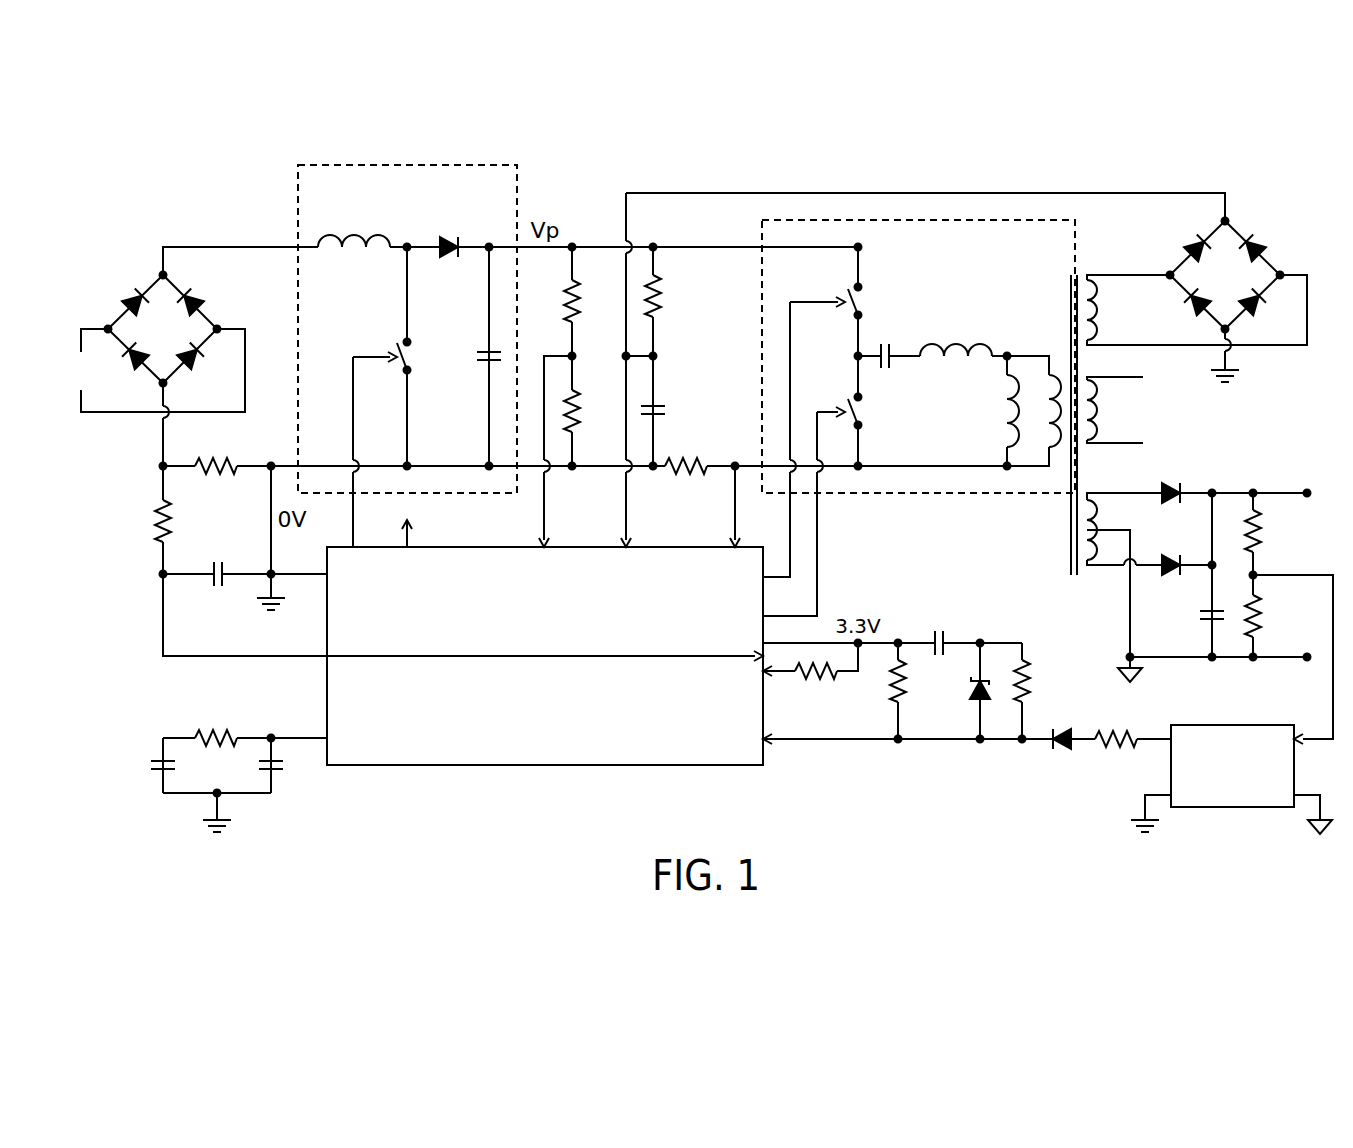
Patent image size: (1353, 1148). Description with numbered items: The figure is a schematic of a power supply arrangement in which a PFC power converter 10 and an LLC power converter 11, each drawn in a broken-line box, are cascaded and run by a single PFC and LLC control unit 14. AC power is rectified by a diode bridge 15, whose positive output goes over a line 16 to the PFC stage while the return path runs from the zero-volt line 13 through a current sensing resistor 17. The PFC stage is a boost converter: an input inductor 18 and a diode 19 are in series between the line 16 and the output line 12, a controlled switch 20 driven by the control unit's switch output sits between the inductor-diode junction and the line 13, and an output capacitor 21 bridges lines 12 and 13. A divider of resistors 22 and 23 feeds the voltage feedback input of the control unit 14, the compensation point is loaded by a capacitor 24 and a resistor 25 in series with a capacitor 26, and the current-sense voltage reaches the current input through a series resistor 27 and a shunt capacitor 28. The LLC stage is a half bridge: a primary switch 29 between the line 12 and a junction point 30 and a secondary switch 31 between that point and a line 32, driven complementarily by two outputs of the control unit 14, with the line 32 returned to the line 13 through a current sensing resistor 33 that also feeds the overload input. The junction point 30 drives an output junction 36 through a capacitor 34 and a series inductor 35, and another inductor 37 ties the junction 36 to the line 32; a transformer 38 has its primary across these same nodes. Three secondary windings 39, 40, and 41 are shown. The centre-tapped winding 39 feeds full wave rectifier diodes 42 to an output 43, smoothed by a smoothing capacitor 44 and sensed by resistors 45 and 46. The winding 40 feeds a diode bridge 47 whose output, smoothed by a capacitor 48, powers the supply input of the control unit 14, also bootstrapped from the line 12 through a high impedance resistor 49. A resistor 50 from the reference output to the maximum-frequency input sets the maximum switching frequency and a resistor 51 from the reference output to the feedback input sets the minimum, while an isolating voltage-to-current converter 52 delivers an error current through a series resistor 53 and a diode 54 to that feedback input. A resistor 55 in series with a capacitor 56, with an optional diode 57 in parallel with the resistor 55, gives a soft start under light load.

The PFC power converter 10 is at (394, 227).
The LLC power converter 11 is at (955, 285).
The line 12 is at (597, 245).
The zero-volt (0V) line 13 is at (455, 468).
The PFC and LLC control unit 14 is at (530, 684).
The diode bridge 15 is at (150, 341).
The line 16 is at (222, 245).
The current sensing resistor 17 is at (220, 470).
The input inductor 18 is at (362, 258).
The diode 19 is at (452, 258).
The controlled switch 20 is at (392, 350).
The output capacitor 21 is at (484, 357).
The resistor 22 is at (567, 293).
The resistor 23 is at (575, 414).
The capacitor 24 is at (282, 778).
The resistor 25 is at (222, 727).
The capacitor 26 is at (148, 765).
The series resistor 27 is at (150, 520).
The shunt capacitor 28 is at (218, 590).
The primary switch 29 is at (848, 294).
The junction point 30 is at (855, 352).
The secondary switch 31 is at (848, 404).
The line 32 is at (920, 470).
The current sensing resistor 33 is at (693, 470).
The capacitor 34 is at (892, 372).
The series inductor 35 is at (925, 340).
The output junction 36 is at (1008, 345).
The inductor 37 is at (995, 417).
The transformer 38 is at (1066, 490).
The secondary winding 39 is at (1095, 578).
The secondary winding 40 is at (1105, 306).
The secondary winding 41 is at (1105, 402).
The full wave rectifier diodes 42 is at (1157, 541).
The output 43 is at (1306, 488).
The smoothing capacitor 44 is at (1200, 616).
The resistor 45 is at (1262, 531).
The resistor 46 is at (1262, 616).
The diode bridge 47 is at (1212, 287).
The capacitor 48 is at (660, 410).
The high impedance resistor 49 is at (660, 316).
The resistor 50 is at (814, 680).
The resistor 51 is at (890, 698).
The isolating voltage-to-current (V-I) converter 52 is at (1228, 724).
The series resistor 53 is at (1100, 748).
The diode 54 is at (1050, 748).
The resistor 55 is at (1035, 680).
The capacitor 56 is at (935, 628).
The diode 57 is at (973, 690).